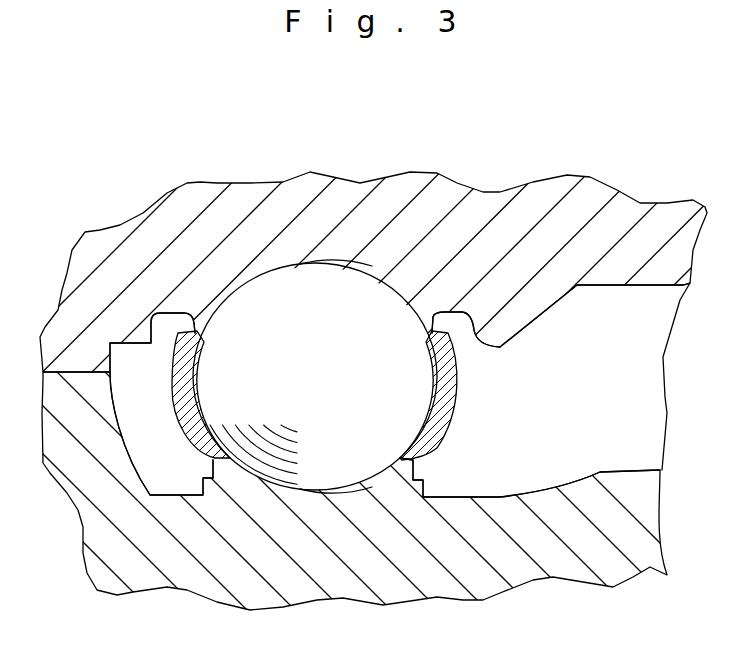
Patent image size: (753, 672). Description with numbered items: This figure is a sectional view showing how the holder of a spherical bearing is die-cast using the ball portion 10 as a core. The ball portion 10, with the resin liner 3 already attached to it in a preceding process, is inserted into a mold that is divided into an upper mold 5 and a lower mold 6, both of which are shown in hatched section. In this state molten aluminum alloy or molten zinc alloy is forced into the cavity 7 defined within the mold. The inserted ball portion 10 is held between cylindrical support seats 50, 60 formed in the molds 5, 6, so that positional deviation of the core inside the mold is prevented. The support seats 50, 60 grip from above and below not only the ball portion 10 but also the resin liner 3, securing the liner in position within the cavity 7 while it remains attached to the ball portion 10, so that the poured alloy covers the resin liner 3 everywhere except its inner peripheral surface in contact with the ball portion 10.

The resin liner 3 is at (172, 372).
The upper mold 5 is at (88, 273).
The lower mold 6 is at (90, 515).
The cavity 7 is at (138, 427).
The ball portion 10 is at (283, 295).
The support seat 50 is at (363, 268).
The support seat 60 is at (348, 490).